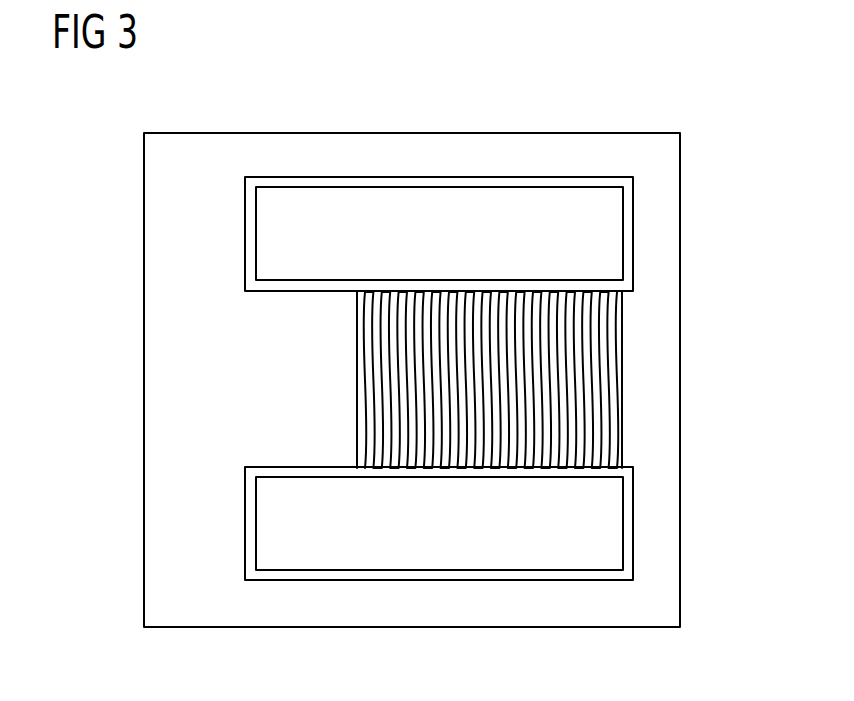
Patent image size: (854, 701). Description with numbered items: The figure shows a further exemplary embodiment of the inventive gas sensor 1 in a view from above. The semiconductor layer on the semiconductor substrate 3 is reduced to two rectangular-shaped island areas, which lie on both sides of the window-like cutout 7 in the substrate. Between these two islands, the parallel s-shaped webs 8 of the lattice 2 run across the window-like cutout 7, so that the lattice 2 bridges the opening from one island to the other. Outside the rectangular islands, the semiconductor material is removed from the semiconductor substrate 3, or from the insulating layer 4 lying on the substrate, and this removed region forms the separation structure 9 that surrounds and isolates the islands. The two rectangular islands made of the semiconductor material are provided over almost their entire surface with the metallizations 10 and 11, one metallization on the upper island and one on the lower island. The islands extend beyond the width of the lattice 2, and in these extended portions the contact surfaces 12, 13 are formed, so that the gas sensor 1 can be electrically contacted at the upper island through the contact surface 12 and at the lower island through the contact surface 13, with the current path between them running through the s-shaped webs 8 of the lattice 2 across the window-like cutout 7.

The gas sensor 1 is at (398, 349).
The lattice 2 is at (500, 379).
The semiconductor substrate 3 is at (368, 380).
The insulating layer 4 is at (368, 380).
The separation structure 9 is at (153, 437).
The window-like cutout 7 is at (615, 418).
The s-shaped webs 8 is at (376, 362).
The metallization 10 is at (548, 198).
The metallization 11 is at (548, 560).
The contact surface 12 is at (466, 188).
The contact surface 13 is at (466, 571).